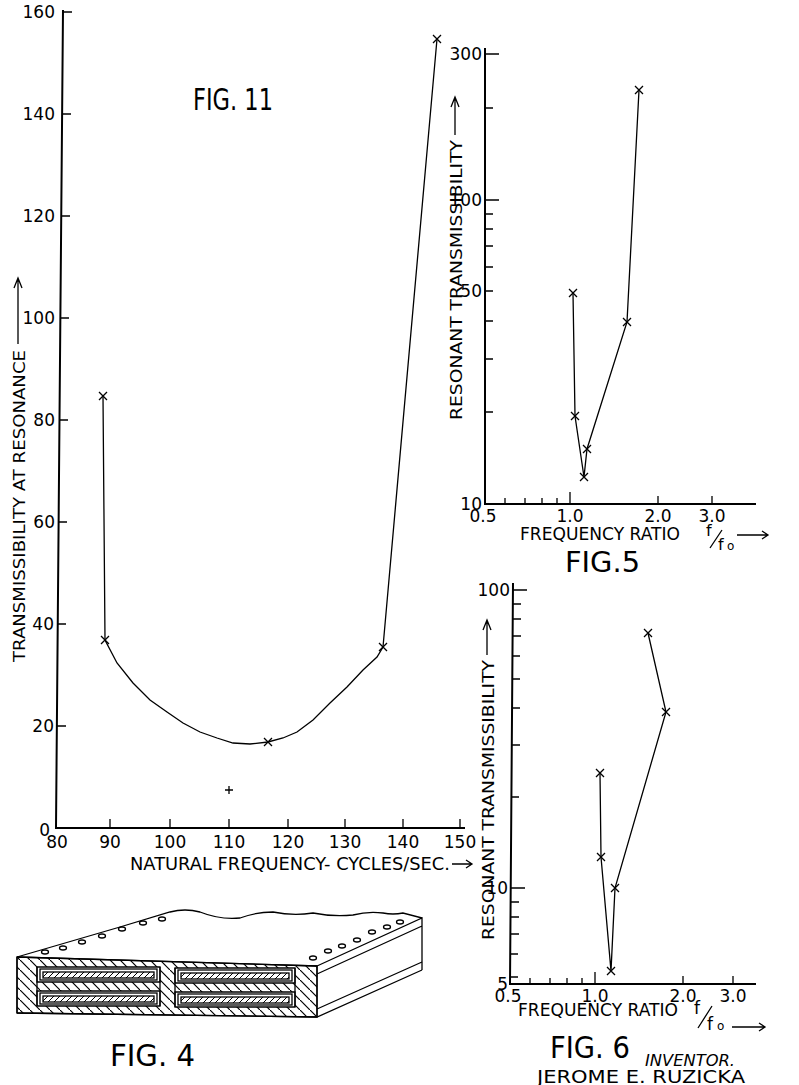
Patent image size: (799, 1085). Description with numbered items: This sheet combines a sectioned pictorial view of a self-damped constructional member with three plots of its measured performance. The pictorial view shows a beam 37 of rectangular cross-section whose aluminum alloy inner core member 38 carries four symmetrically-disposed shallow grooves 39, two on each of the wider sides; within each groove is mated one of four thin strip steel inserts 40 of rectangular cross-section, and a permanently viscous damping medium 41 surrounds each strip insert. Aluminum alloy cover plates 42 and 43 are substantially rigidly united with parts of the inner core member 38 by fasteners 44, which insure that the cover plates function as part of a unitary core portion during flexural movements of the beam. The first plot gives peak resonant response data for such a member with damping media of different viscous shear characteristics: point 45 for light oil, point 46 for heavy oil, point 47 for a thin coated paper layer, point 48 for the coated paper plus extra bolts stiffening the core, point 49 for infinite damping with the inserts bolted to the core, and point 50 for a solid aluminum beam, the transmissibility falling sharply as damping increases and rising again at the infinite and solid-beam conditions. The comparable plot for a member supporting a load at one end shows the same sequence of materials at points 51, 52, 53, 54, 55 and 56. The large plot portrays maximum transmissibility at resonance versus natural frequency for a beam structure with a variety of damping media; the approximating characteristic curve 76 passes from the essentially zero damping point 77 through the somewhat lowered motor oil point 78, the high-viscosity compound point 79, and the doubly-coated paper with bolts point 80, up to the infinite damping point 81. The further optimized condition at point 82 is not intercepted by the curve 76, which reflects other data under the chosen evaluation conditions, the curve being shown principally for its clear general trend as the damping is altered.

In FIG. 4, the beam 37 is at (222, 966).
In FIG. 4, the inner core member 38 is at (352, 977).
In FIG. 4, the shallow grooves 39 is at (60, 1008).
In FIG. 4, the thin strip steel inserts 40 is at (240, 1000).
In FIG. 4, the permanently viscous damping medium 41 is at (298, 1010).
In FIG. 4, the cover plate 42 is at (240, 925).
In FIG. 4, the cover plate 43 is at (392, 975).
In FIG. 4, the fasteners 44 is at (373, 930).
In FIG. 5, the point a (light oil) 45 is at (570, 292).
In FIG. 5, the point b (heavy oil) 46 is at (572, 416).
In FIG. 5, the point c (coated paper layer) 47 is at (581, 477).
In FIG. 5, the point d (coated paper plus extra bolts) 48 is at (590, 449).
In FIG. 5, the point e (infinite damping) 49 is at (630, 322).
In FIG. 5, the point f (solid aluminum beam) 50 is at (642, 90).
In FIG. 6, the point a (light oil) 51 is at (597, 772).
In FIG. 6, the point b (heavy oil) 52 is at (598, 857).
In FIG. 6, the point c (coated paper layer) 53 is at (609, 970).
In FIG. 6, the point d (coated paper plus extra bolts) 54 is at (618, 888).
In FIG. 6, the point e (infinite damping) 55 is at (669, 712).
In FIG. 6, the point f (solid aluminum beam) 56 is at (651, 633).
In FIG. 11, the characteristic curve 76 is at (105, 577).
In FIG. 11, the zero damping point 77 is at (108, 396).
In FIG. 11, the motor oil point 78 is at (110, 640).
In FIG. 11, the high-viscosity compound point 79 is at (271, 737).
In FIG. 11, the coated paper point 80 is at (380, 645).
In FIG. 11, the infinite damping point 81 is at (435, 41).
In FIG. 11, the further optimized point 82 is at (231, 789).